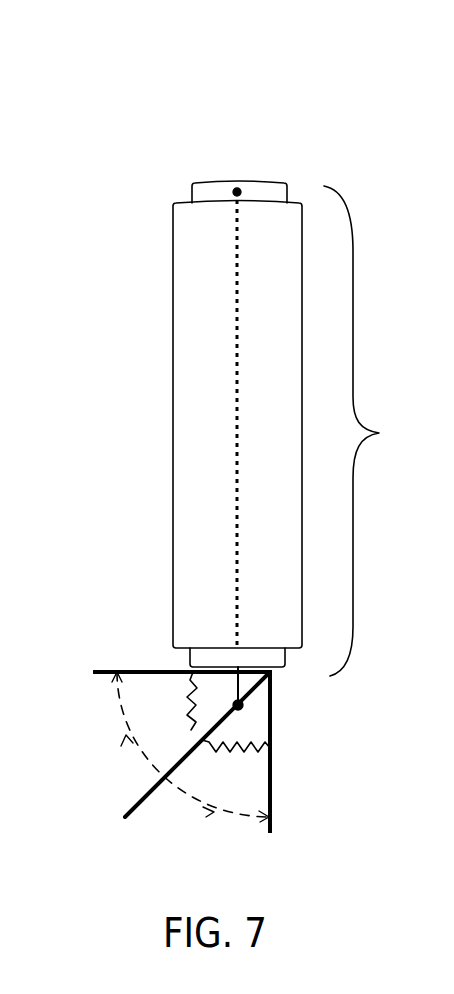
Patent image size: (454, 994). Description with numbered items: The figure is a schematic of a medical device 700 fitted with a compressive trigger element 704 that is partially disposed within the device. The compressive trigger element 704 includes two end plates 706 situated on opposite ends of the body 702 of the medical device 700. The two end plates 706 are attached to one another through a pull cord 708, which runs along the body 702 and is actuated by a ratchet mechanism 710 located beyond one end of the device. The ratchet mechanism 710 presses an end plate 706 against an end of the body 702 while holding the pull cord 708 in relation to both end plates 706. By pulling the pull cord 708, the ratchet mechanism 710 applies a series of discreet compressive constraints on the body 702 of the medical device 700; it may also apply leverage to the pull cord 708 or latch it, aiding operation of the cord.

The medical device 700 is at (326, 121).
The body 702 is at (202, 343).
The compressive trigger element 704 is at (382, 431).
The end plates 706 is at (187, 187).
The pull cord 708 is at (237, 510).
The ratchet mechanism 710 is at (193, 735).